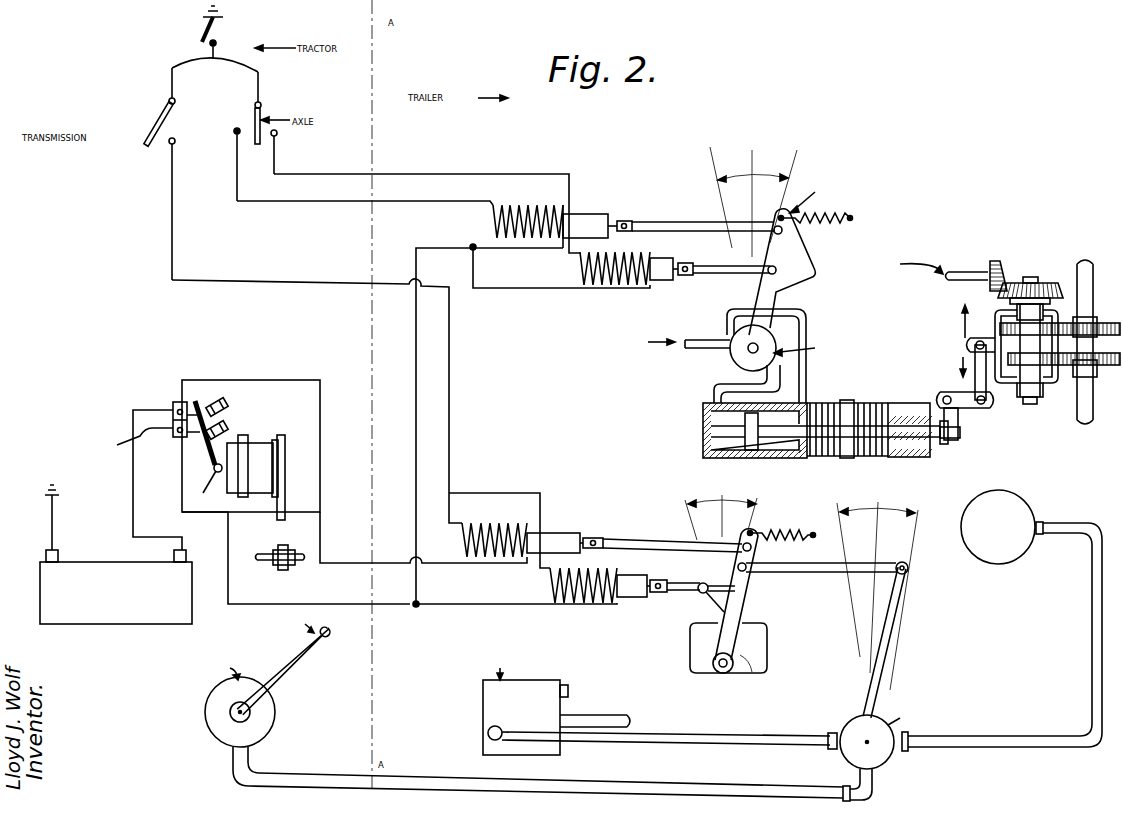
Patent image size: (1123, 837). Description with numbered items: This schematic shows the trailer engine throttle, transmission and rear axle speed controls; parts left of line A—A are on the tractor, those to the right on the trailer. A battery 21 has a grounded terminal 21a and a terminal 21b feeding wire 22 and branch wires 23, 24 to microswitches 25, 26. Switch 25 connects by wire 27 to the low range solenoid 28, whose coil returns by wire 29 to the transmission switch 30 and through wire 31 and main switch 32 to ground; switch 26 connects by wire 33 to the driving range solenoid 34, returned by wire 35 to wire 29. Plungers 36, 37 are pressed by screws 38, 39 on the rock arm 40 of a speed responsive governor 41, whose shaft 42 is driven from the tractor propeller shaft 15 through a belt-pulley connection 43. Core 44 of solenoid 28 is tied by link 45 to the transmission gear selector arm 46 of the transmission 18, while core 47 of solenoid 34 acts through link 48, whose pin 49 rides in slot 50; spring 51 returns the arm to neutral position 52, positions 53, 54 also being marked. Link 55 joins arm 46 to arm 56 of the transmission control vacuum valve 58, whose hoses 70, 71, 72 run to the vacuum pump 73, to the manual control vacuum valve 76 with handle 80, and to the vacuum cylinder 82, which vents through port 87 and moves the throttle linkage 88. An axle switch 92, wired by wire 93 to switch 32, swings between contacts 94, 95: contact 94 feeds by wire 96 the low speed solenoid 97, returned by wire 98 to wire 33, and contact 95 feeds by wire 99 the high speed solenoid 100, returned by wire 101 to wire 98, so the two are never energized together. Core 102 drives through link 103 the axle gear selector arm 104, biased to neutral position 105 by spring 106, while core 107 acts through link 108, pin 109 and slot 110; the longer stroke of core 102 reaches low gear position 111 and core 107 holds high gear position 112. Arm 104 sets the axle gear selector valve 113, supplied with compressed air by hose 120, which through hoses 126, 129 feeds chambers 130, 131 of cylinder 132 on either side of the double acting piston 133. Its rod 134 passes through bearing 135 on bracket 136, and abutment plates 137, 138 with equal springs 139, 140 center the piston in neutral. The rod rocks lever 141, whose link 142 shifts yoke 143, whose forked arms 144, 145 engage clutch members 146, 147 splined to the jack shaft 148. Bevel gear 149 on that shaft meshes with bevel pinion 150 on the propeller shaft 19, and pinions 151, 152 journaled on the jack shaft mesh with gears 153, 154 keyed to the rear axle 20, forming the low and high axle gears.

The tractor propeller shaft 15 is at (263, 560).
The transmission 18 is at (768, 654).
The propeller shaft 19 is at (945, 277).
The rear axle 20 is at (1085, 424).
The battery 21 is at (160, 620).
The battery terminal 21a is at (58, 556).
The battery terminal 21b is at (186, 557).
The wire 22 is at (133, 497).
The wire 23 is at (143, 410).
The wire 24 is at (130, 447).
The microswitch 25 is at (173, 402).
The microswitch 26 is at (177, 433).
The wire 27 is at (267, 380).
The low range solenoid 28 is at (462, 548).
The wire 29 is at (449, 357).
The transmission switch 30 is at (168, 118).
The wire 31 is at (180, 62).
The main switch 32 is at (205, 31).
The wire 33 is at (274, 604).
The driving range solenoid 34 is at (550, 588).
The wire 35 is at (503, 493).
The plunger 36 is at (193, 402).
The plunger 37 is at (197, 437).
The screw 38 is at (219, 400).
The screw 39 is at (229, 428).
The rock arm 40 is at (207, 489).
The speed responsive governor 41 is at (228, 498).
The governor shaft 42 is at (290, 462).
The belt-pulley connection 43 is at (294, 480).
The core 44 is at (562, 533).
The link 45 is at (630, 540).
The transmission gear selector arm 46 is at (733, 614).
The core 47 is at (620, 606).
The link 48 is at (660, 598).
The pin 49 is at (700, 594).
The elongated slot 50 is at (738, 588).
The spring 51 is at (790, 532).
The neutral position 52 is at (760, 500).
The low position 53 is at (687, 518).
The neutral position 54 is at (722, 495).
The link 55 is at (815, 573).
The arm 56 is at (893, 621).
The transmission control vacuum valve 58 is at (882, 762).
The hose 70 is at (1092, 634).
The hose 71 is at (413, 780).
The hose 72 is at (682, 740).
The vacuum pump 73 is at (1001, 563).
The manual control vacuum valve 76 is at (205, 714).
The handle 80 is at (310, 652).
The vacuum cylinder 82 is at (483, 703).
The port 87 is at (570, 690).
The linkage 88 is at (628, 722).
The axle switch 92 is at (262, 110).
The wire 93 is at (267, 70).
The contact 94 is at (235, 132).
The contact 95 is at (277, 135).
The wire 96 is at (298, 203).
The low speed solenoid 97 is at (490, 228).
The wire 98 is at (416, 265).
The wire 99 is at (407, 173).
The high speed solenoid 100 is at (580, 272).
The wire 101 is at (513, 290).
The core 102 is at (588, 214).
The link 103 is at (650, 224).
The axle gear selector arm 104 is at (808, 283).
The neutral position 105 is at (787, 208).
The spring 106 is at (835, 214).
The core 107 is at (665, 282).
The link 108 is at (720, 275).
The pin 109 is at (790, 243).
The elongated slot 110 is at (790, 262).
The low gear position 111 is at (710, 152).
The high gear position 112 is at (757, 163).
The axle gear selector valve 113 is at (730, 335).
The hose 120 is at (700, 348).
The hose 126 is at (714, 383).
The hose 129 is at (808, 318).
The chamber 130 is at (703, 415).
The chamber 131 is at (775, 460).
The cylinder 132 is at (711, 427).
The double acting piston 133 is at (711, 440).
The rod 134 is at (915, 442).
The bearing 135 is at (950, 444).
The bracket 136 is at (940, 397).
The abutment plate 137 is at (885, 458).
The abutment plate 138 is at (838, 457).
The spring 139 is at (850, 402).
The spring 140 is at (825, 403).
The lever 141 is at (958, 438).
The link 142 is at (985, 410).
The shiftable yoke 143 is at (995, 330).
The forked arm 144 is at (1012, 395).
The forked arm 145 is at (992, 310).
The clutch member 146 is at (1040, 392).
The clutch member 147 is at (1058, 310).
The jack shaft 148 is at (1030, 277).
The bevel gear 149 is at (1060, 284).
The bevel pinion 150 is at (1000, 260).
The pinion 151 is at (1035, 353).
The pinion 152 is at (1055, 328).
The gear 153 is at (1088, 378).
The gear 154 is at (1090, 320).